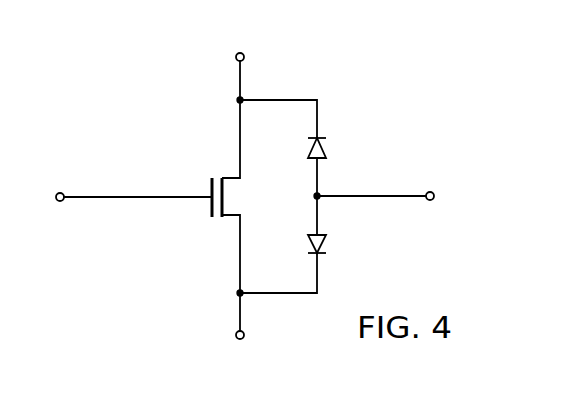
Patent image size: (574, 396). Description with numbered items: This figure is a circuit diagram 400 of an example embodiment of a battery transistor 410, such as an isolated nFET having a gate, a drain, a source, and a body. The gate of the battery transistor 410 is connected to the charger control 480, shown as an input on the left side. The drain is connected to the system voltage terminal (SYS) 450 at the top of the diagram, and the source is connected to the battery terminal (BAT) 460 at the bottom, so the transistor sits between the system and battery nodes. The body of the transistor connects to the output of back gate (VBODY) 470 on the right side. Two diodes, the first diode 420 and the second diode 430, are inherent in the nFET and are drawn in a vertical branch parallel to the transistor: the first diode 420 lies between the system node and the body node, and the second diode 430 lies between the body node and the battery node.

The battery switch circuit 400 is at (95, 81).
The battery transistor 410 is at (210, 207).
The diode D1 420 is at (328, 140).
The diode D2 430 is at (326, 248).
The system voltage terminal (SYS) 450 is at (235, 59).
The battery terminal (BAT) 460 is at (235, 333).
The output of back gate (VBODY) 470 is at (432, 191).
The charger control 480 is at (58, 192).